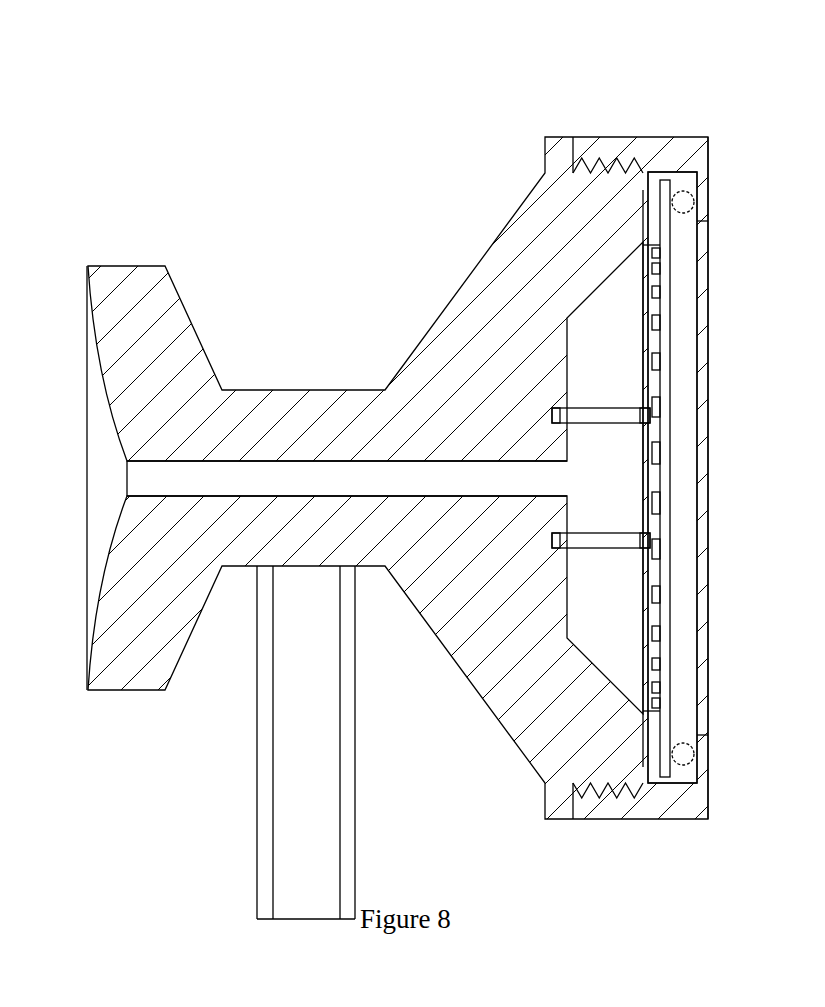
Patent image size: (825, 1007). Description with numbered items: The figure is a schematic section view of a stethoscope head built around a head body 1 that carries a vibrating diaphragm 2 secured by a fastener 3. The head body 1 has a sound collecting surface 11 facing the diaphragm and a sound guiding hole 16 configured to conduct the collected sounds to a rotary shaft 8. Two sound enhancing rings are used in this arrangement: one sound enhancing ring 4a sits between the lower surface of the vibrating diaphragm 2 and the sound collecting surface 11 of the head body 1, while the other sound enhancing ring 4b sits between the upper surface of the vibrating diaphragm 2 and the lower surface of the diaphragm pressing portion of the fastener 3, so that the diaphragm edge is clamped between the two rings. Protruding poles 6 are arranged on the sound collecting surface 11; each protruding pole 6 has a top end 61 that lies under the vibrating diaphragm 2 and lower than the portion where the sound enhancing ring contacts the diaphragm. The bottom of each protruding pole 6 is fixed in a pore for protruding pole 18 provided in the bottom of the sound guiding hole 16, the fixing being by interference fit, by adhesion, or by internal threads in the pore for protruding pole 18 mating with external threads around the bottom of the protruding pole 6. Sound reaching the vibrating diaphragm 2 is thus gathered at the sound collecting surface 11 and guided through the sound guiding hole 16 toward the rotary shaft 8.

The head body 1 is at (507, 290).
The vibrating diaphragm 2 is at (668, 294).
The fastener 3 is at (675, 147).
The sound enhancing ring 4a is at (653, 190).
The sound enhancing ring 4b is at (688, 198).
The protruding pole 6 is at (604, 413).
The top end 61 is at (656, 412).
The rotary shaft 8 is at (338, 755).
The sound collecting surface 11 is at (568, 587).
The sound guiding hole 16 is at (455, 468).
The pore for protruding pole 18 is at (548, 410).